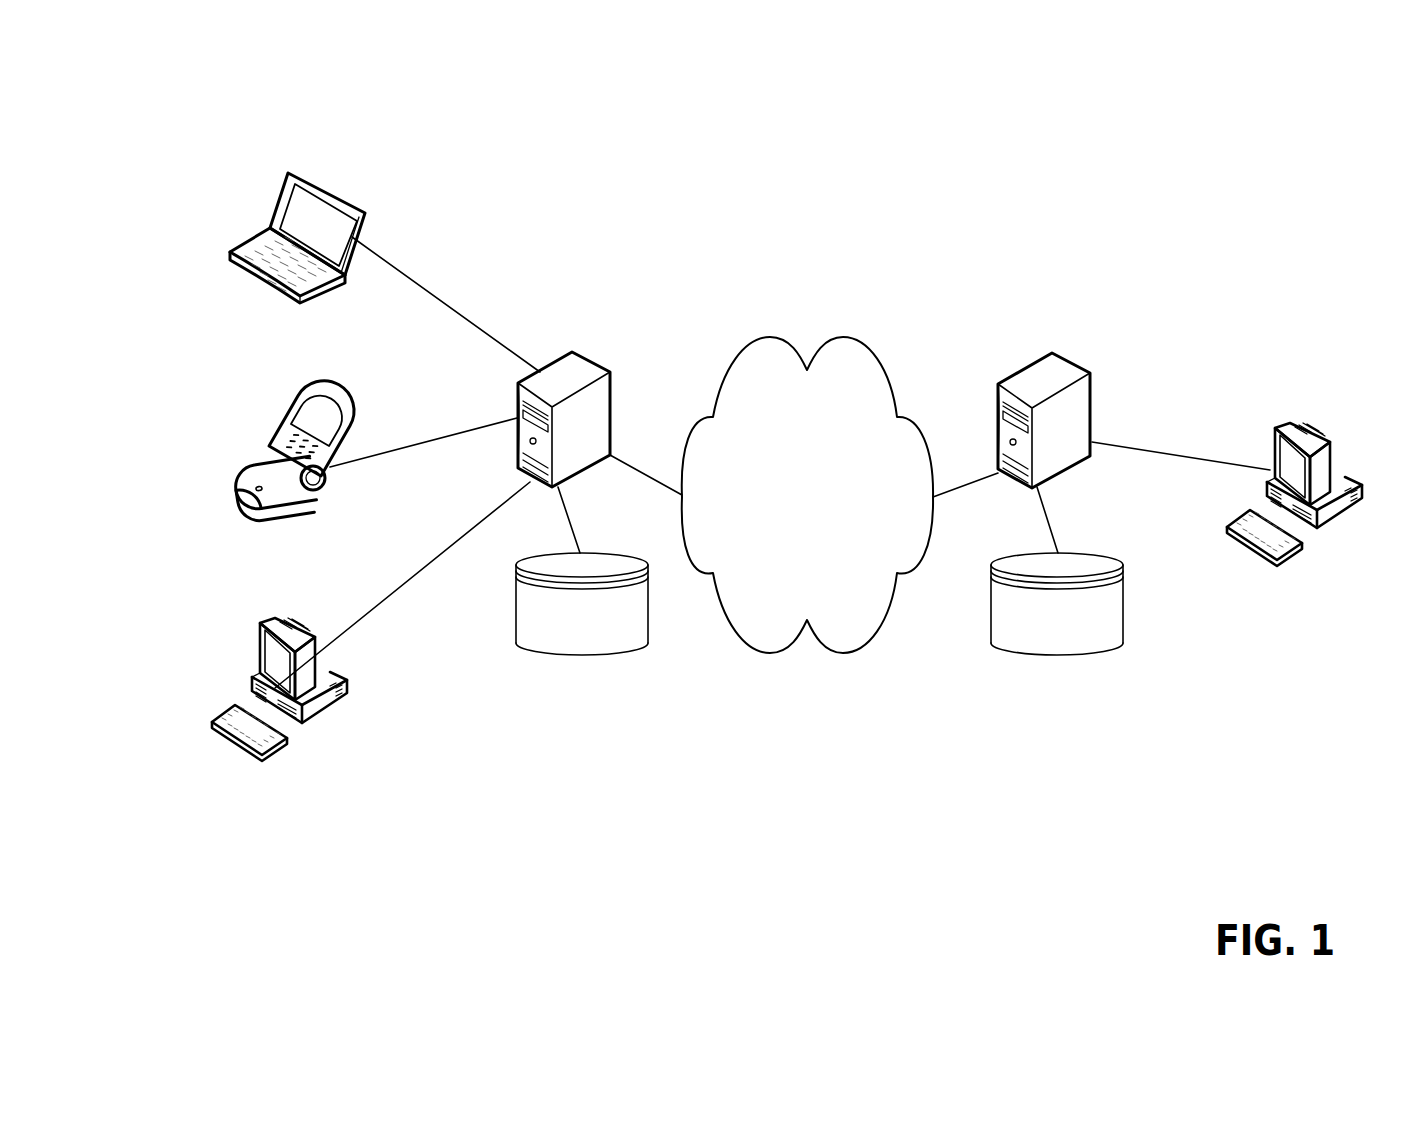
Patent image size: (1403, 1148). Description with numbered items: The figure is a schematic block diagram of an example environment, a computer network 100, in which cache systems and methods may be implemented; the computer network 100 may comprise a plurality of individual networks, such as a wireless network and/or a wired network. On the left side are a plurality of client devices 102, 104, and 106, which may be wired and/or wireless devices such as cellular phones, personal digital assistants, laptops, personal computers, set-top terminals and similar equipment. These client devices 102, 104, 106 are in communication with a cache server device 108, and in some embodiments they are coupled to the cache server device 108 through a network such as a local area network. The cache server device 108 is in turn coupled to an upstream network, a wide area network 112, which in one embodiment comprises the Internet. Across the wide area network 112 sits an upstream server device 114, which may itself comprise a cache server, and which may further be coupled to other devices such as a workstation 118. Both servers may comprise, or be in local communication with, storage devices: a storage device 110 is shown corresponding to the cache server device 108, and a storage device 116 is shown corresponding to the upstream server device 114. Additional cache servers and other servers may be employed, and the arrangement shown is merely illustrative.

The computer network 100 is at (1262, 172).
The client device 102 is at (358, 213).
The client device 104 is at (310, 390).
The client device 106 is at (270, 623).
The cache server device 108 is at (572, 352).
The storage device 110 is at (566, 640).
The wide area network 112 is at (791, 524).
The upstream server device 114 is at (1057, 353).
The storage device 116 is at (1041, 640).
The workstation 118 is at (1340, 523).